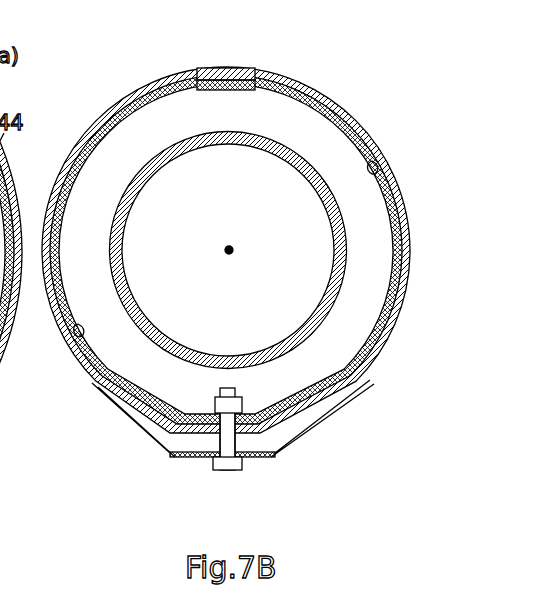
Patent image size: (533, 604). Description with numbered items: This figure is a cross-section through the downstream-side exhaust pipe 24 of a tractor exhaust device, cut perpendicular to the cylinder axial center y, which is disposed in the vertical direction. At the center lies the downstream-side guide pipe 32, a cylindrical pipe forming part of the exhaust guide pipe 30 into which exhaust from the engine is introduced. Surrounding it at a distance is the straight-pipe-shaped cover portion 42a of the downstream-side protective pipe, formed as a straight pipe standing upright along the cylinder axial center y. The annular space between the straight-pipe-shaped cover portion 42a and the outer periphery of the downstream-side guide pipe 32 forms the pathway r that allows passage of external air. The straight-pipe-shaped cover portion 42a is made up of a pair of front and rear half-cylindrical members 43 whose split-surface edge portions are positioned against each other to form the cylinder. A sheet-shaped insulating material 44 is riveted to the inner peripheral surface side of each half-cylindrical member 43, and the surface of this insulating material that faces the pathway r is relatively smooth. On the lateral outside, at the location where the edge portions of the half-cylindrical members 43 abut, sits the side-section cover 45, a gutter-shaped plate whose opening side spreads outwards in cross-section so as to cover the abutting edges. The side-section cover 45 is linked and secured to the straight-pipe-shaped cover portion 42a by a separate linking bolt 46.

The downstream-side exhaust pipe 24 is at (221, 276).
The half-cylindrical member 43 is at (220, 242).
The straight-pipe-shaped cover portion 42a is at (344, 110).
The sheet-shaped insulating material 44 is at (373, 161).
The side-section cover 45 is at (299, 430).
The linking bolt 46 is at (231, 471).
The downstream-side guide pipe 32 is at (227, 249).
The exhaust guide pipe 30 is at (127, 283).
The pathway r is at (351, 327).
The cylinder axial center y is at (229, 247).